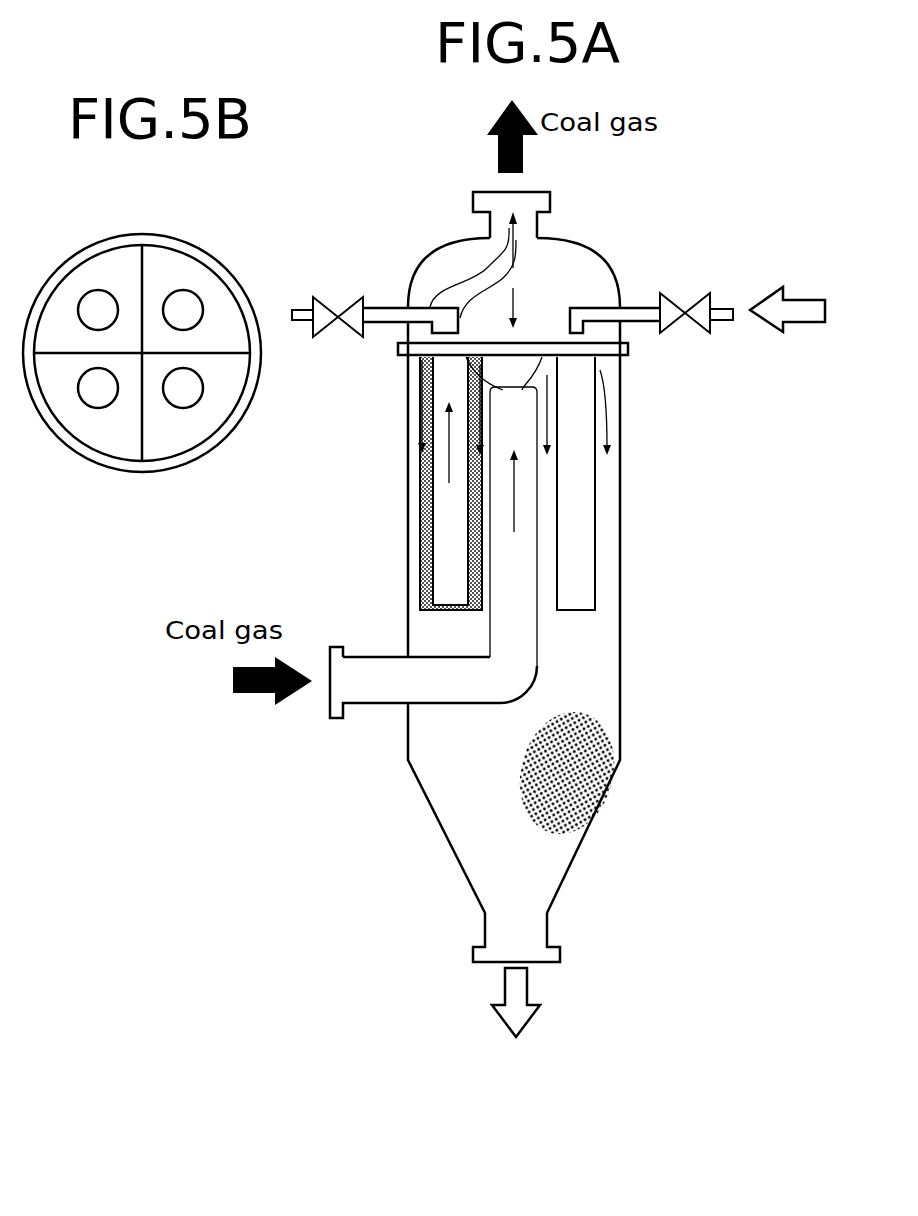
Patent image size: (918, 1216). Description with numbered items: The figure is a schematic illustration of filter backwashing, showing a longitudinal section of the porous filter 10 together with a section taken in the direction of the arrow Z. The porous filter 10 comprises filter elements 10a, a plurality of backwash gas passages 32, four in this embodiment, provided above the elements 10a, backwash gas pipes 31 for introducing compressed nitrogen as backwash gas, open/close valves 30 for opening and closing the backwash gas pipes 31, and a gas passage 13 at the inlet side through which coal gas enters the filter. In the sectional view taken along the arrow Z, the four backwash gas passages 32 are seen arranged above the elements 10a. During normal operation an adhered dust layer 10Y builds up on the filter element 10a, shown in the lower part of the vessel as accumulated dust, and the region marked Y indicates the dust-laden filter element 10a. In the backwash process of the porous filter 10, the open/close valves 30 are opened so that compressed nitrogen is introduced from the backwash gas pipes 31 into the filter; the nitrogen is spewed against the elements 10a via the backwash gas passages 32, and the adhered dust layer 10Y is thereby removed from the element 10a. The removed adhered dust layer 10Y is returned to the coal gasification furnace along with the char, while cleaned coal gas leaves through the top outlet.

In FIG. 5A, the porous filter 10 is at (622, 627).
In FIG. 5A, the filter element 10a is at (595, 515).
In FIG. 5A, the adhered dust layer 10Y is at (570, 780).
In FIG. 5A, the gas passage 13 is at (377, 710).
In FIG. 5A, the open/close valve 30 is at (335, 320).
In FIG. 5A, the backwash gas pipe 31 is at (390, 307).
In FIG. 5B, the backwash gas passage 32 is at (90, 302).
In FIG. 5A, the filter element Y is at (427, 550).
In FIG. 5A, the arrow Z is at (527, 308).